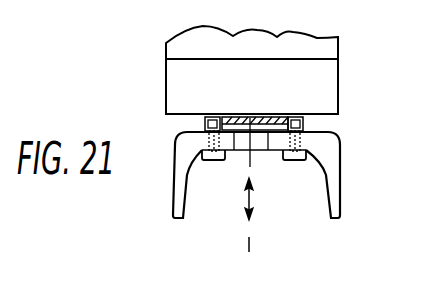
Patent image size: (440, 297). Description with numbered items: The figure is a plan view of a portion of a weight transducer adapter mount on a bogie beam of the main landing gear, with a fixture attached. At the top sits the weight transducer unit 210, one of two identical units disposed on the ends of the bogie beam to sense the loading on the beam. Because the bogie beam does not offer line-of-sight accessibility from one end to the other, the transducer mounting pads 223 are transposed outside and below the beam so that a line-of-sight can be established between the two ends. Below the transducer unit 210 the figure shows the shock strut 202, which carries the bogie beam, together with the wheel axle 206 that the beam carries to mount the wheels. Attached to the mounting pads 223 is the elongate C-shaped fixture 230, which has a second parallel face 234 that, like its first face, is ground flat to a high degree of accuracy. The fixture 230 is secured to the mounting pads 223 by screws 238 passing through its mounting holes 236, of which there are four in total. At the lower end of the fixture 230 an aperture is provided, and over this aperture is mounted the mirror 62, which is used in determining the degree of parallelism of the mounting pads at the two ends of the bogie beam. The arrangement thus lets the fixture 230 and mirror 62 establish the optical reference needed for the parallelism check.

The weight transducer unit 210 is at (163, 54).
The mounting pads 223 is at (205, 121).
The mirror 62 is at (237, 118).
The second parallel face 234 is at (300, 130).
The wheel axle 206 is at (313, 131).
The shock strut 202 is at (342, 190).
The mounting holes 236 is at (207, 137).
The screws 238 is at (219, 162).
The C-shaped fixture 230 is at (272, 160).